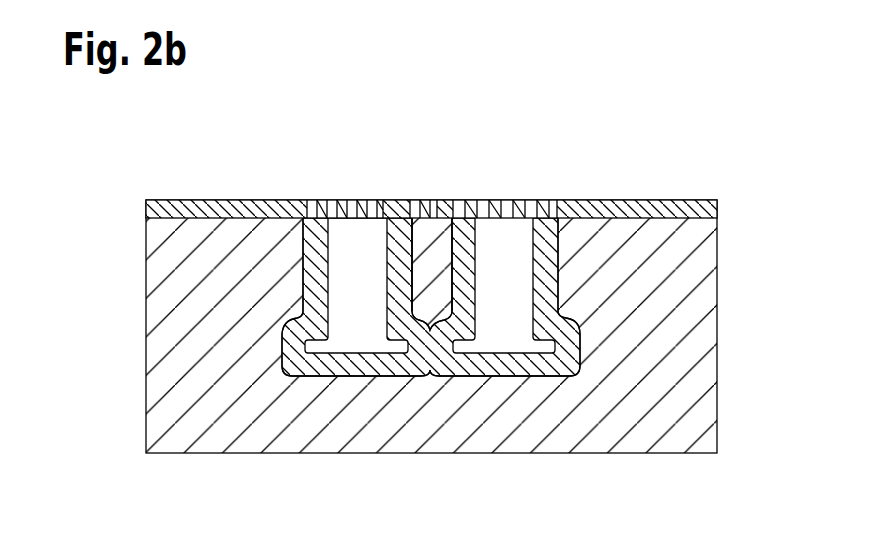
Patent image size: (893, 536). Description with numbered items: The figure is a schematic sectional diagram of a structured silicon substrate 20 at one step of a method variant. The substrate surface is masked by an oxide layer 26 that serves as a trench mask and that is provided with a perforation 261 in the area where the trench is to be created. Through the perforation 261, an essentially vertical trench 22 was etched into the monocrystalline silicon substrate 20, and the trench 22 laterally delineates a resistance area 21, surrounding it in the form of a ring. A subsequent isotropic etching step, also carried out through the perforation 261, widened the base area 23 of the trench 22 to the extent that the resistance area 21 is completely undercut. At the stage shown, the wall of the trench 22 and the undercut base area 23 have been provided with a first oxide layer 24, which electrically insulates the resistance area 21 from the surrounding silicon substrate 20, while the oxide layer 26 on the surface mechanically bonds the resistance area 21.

The silicon substrate 20 is at (162, 357).
The resistance area 21 is at (429, 230).
The trench 22 is at (502, 232).
The base area 23 is at (508, 345).
The first oxide layer 24 is at (540, 232).
The oxide layer 26 is at (662, 205).
The perforation 261 is at (316, 186).